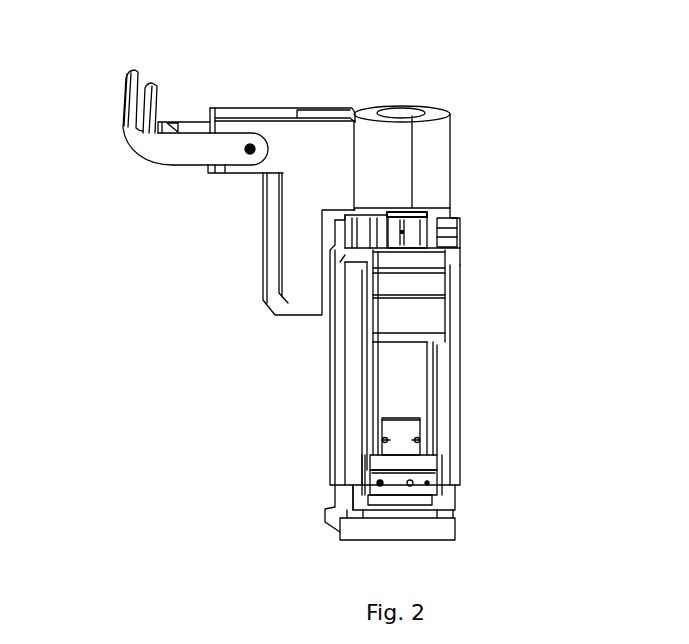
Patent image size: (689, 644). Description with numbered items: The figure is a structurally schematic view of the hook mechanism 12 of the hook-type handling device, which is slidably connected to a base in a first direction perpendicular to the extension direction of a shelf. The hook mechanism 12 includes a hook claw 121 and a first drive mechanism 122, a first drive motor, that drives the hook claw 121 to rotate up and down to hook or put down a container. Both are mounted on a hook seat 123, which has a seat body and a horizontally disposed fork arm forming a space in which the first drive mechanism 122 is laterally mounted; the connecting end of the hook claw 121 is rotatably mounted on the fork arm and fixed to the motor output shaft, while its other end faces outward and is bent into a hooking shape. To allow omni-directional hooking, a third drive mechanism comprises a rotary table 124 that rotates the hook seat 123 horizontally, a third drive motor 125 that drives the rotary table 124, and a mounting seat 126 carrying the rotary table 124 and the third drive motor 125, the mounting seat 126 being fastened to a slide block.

The hook mechanism 12 is at (532, 73).
The hook claw 121 is at (127, 93).
The first drive mechanism 122 is at (305, 107).
The hook seat 123 is at (368, 107).
The rotary table 124 is at (442, 218).
The third drive motor 125 is at (413, 400).
The mounting seat 126 is at (448, 502).